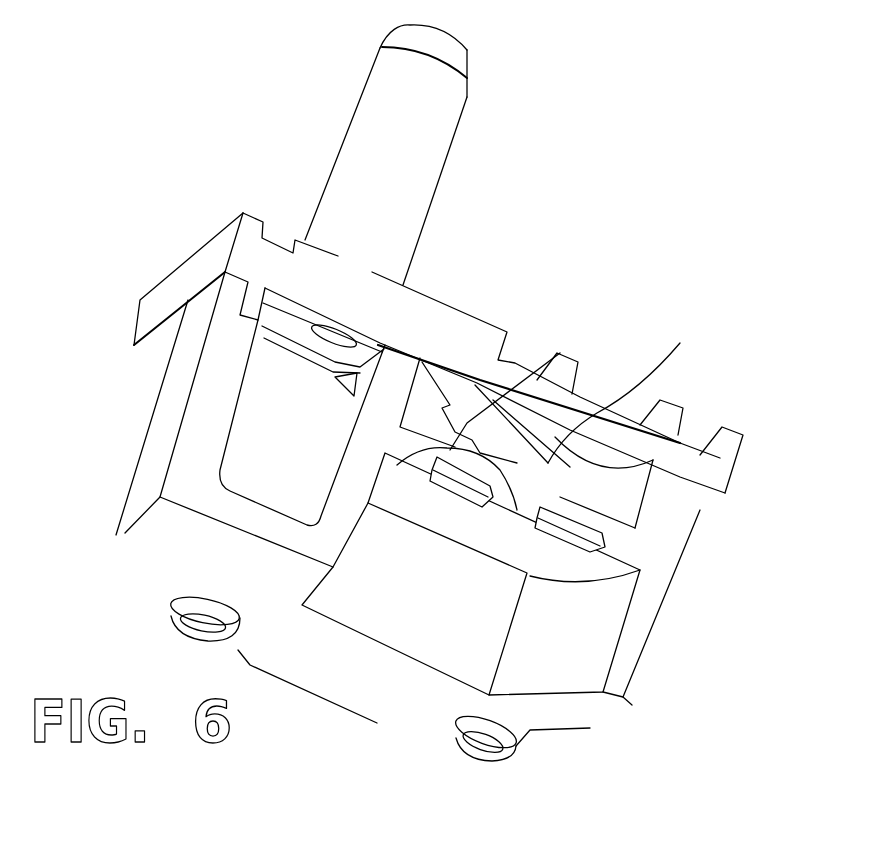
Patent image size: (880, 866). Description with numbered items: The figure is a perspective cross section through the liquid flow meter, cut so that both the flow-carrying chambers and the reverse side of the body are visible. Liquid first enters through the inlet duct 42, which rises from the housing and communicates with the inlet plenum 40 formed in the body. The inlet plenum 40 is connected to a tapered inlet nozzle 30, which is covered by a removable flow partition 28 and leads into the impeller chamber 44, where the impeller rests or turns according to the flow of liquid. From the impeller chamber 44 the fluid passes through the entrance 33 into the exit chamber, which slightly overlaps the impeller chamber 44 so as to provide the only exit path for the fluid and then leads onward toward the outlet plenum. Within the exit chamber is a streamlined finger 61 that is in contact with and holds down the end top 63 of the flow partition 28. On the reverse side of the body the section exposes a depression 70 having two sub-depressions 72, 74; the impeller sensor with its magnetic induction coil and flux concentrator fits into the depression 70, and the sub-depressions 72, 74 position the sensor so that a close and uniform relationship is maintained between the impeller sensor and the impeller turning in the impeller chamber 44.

The flow partition 28 is at (608, 410).
The tapered inlet nozzle 30 is at (337, 393).
The entrance 33 is at (567, 400).
The inlet plenum 40 is at (307, 485).
The inlet duct 42 is at (440, 184).
The impeller chamber 44 is at (632, 508).
The streamlined finger 61 is at (512, 388).
The end top 63 is at (505, 520).
The depression 70 is at (440, 637).
The sub-depression 72 is at (546, 535).
The sub-depression 74 is at (463, 490).